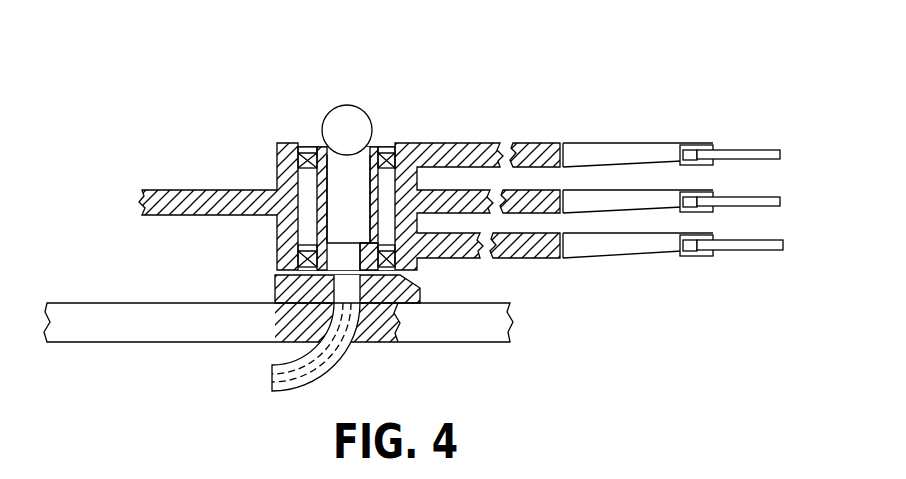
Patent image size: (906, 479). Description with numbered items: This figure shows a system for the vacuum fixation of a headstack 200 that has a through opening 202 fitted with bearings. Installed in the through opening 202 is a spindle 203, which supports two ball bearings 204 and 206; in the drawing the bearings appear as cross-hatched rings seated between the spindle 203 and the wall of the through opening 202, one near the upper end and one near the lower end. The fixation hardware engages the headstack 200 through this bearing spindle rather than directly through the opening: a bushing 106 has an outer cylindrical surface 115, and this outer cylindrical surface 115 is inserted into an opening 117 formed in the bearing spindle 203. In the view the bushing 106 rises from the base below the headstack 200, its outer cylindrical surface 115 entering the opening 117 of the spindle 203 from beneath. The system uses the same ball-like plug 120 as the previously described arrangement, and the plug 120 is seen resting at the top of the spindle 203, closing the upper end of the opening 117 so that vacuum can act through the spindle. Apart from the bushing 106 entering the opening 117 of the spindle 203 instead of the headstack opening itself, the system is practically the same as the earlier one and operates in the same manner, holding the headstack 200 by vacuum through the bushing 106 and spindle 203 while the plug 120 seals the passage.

The headstack 200 is at (666, 86).
The ball-like plug 120 is at (348, 120).
The opening of bearing spindle 117 is at (351, 167).
The spindle 203 is at (316, 143).
The ball bearing 204 is at (304, 144).
The through opening 202 is at (307, 215).
The ball bearing 206 is at (304, 250).
The outer cylindrical surface 115 is at (411, 289).
The bushing 106 is at (291, 320).